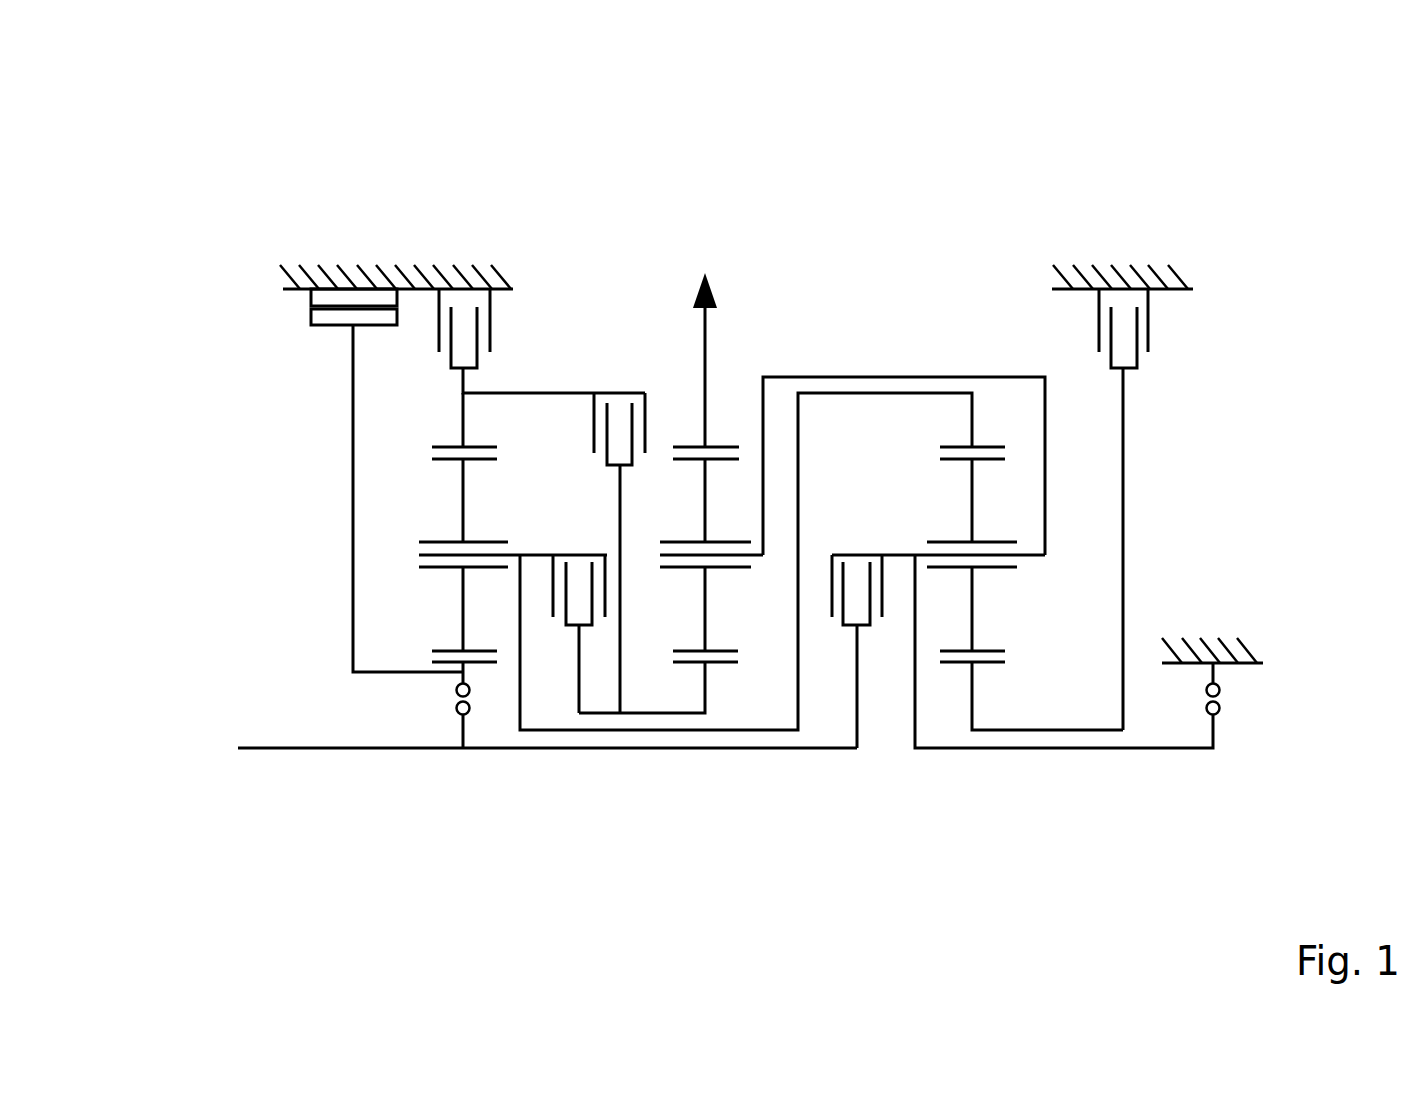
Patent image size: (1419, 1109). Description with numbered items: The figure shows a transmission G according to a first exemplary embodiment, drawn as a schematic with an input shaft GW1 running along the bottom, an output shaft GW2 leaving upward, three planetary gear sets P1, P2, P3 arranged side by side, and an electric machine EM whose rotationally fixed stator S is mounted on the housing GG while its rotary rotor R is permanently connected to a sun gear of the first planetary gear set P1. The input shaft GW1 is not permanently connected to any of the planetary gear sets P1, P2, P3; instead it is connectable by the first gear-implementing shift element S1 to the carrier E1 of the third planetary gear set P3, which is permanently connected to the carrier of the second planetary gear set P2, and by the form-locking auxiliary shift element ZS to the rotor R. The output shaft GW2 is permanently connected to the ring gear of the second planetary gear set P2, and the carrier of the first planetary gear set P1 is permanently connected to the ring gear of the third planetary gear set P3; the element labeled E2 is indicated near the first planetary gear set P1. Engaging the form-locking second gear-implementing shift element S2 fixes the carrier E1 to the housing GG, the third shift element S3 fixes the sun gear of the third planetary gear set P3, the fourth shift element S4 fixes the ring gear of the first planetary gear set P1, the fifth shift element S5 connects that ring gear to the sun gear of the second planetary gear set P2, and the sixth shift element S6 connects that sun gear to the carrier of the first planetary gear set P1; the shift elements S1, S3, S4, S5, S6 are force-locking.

The transmission G is at (273, 218).
The housing GG is at (365, 280).
The electric machine EM is at (281, 456).
The stator S is at (301, 298).
The rotor R is at (301, 316).
The fourth gear-implementing shift element S4 is at (495, 322).
The fifth gear-implementing shift element S5 is at (625, 381).
The sixth gear-implementing shift element S6 is at (591, 632).
The first gear-implementing shift element S1 is at (869, 632).
The second gear-implementing shift element S2 is at (1229, 692).
The third gear-implementing shift element S3 is at (1159, 325).
The input shaft GW1 is at (330, 752).
The output shaft GW2 is at (708, 333).
The first planetary gear set P1 is at (463, 762).
The second planetary gear set P2 is at (705, 762).
The third planetary gear set P3 is at (972, 762).
The carrier E1 is at (1030, 557).
The second element E2 is at (488, 665).
The auxiliary shift element ZS is at (451, 700).